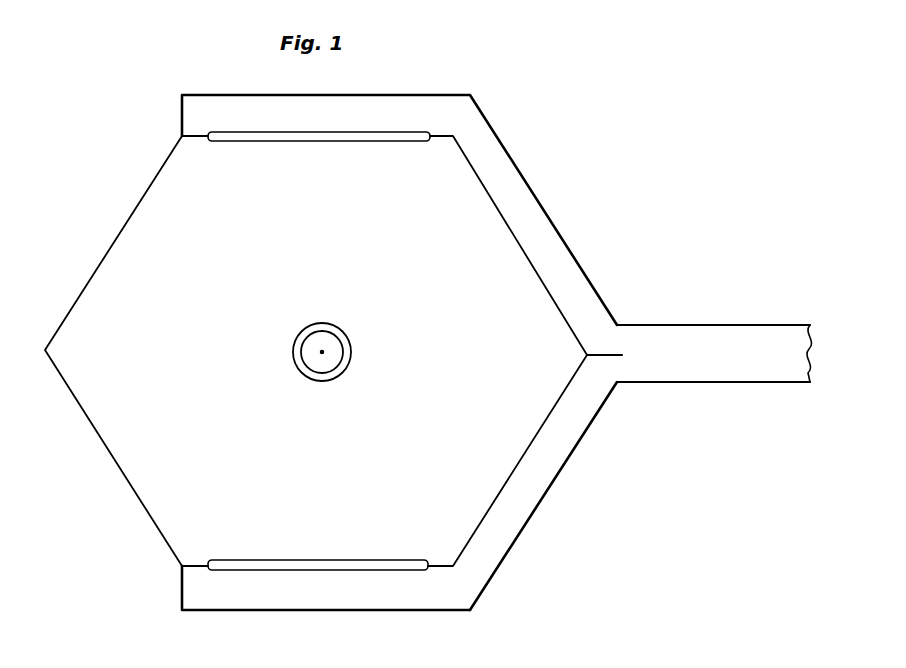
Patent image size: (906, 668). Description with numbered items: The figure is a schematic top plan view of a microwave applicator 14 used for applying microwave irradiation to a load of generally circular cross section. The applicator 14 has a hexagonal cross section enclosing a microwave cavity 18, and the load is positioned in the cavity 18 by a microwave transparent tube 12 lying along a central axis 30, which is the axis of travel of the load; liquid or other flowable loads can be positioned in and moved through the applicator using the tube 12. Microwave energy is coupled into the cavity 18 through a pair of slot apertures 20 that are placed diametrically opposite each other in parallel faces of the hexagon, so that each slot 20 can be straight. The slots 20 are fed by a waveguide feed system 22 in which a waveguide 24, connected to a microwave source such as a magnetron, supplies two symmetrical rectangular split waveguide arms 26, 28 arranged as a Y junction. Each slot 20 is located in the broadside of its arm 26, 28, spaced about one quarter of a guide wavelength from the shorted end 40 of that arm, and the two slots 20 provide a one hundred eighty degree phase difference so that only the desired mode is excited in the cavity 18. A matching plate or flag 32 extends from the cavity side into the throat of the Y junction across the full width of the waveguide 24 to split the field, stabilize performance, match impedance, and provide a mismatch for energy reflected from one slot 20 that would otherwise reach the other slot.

The applicator 14 is at (120, 232).
The microwave cavity 18 is at (338, 264).
The slot apertures 20 is at (378, 141).
The microwave transparent tube 12 is at (352, 355).
The central axis 30 is at (322, 352).
The split waveguide arm 28 is at (544, 212).
The split waveguide arm 26 is at (541, 500).
The waveguide feed system 22 is at (640, 304).
The waveguide 24 is at (717, 325).
The matching plate or flag 32 is at (622, 352).
The shorted end 40 is at (182, 588).